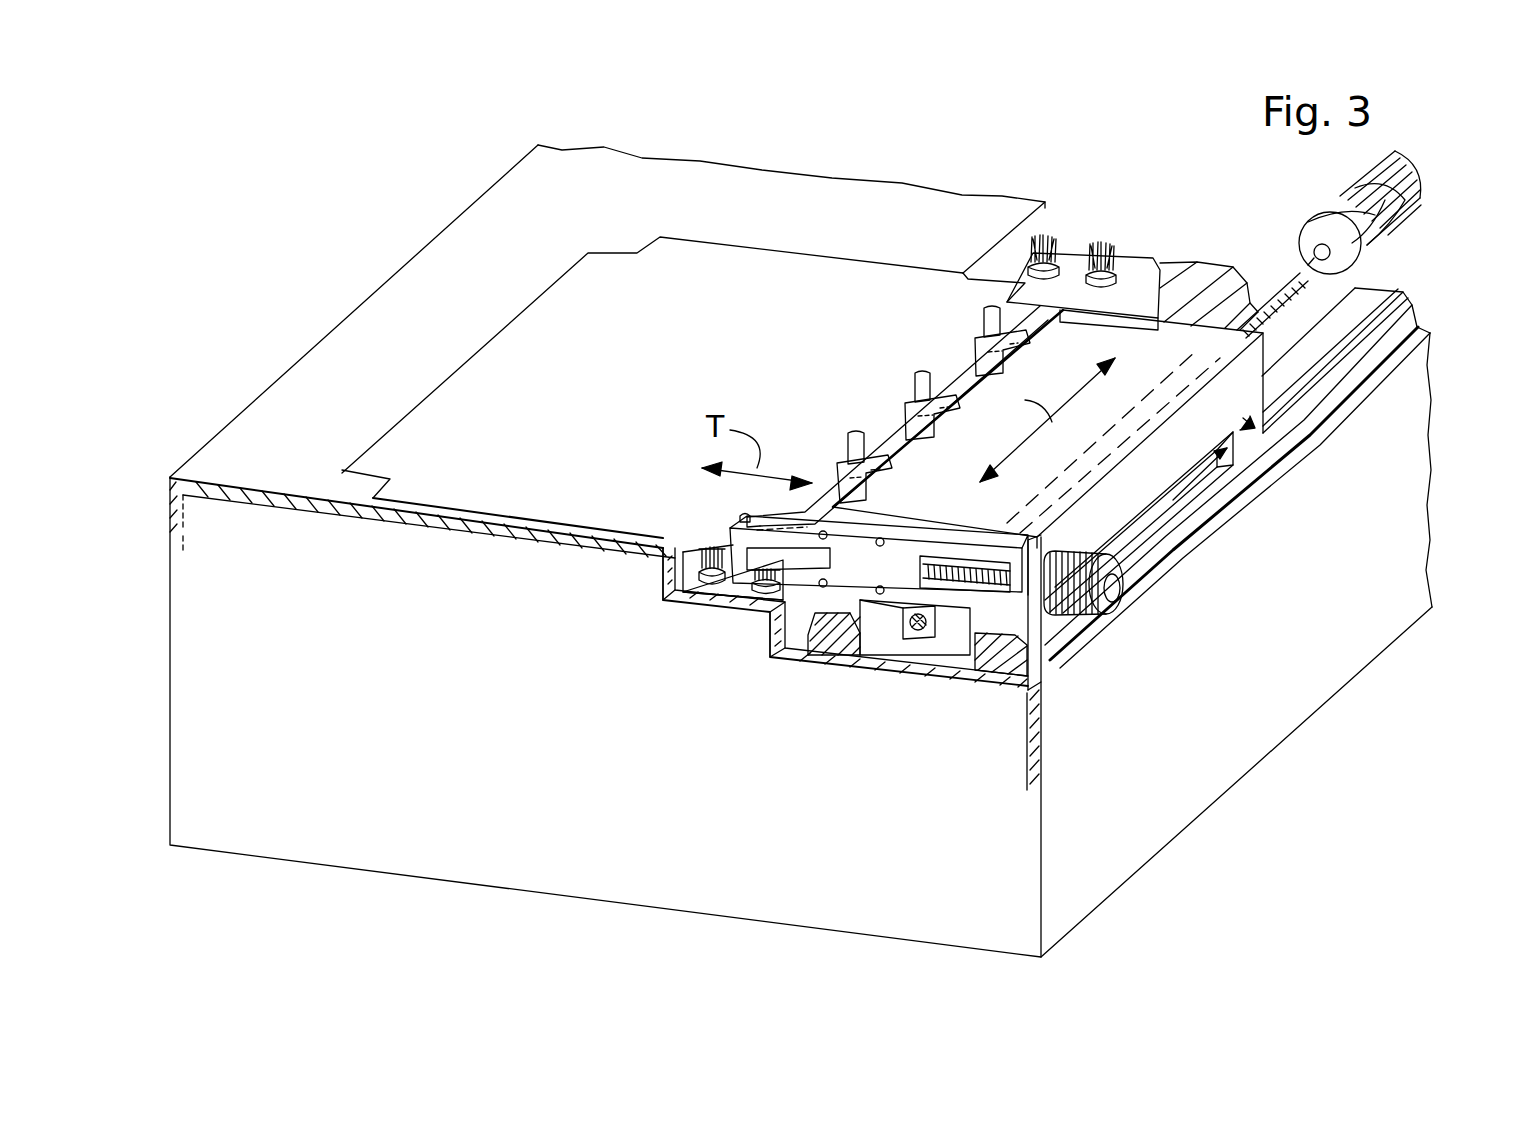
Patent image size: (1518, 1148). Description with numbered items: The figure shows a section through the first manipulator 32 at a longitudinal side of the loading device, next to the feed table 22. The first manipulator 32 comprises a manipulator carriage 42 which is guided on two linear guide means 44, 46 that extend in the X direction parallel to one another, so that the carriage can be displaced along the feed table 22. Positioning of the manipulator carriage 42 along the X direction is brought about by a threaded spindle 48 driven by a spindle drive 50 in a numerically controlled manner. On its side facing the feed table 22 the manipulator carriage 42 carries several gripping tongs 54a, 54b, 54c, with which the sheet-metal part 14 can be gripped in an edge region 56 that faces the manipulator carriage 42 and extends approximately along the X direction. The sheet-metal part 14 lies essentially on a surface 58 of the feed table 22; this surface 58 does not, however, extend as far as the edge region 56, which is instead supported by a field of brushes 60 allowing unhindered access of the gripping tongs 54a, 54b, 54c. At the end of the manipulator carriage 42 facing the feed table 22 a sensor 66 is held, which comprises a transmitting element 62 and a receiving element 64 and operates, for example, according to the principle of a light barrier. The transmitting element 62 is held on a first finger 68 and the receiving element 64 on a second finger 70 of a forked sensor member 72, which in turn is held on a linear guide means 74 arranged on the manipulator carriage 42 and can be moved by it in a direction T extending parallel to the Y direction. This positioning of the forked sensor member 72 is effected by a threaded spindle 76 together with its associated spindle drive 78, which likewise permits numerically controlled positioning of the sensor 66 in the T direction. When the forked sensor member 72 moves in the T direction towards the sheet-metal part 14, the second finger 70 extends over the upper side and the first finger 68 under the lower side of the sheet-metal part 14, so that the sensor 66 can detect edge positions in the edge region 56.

The sheet-metal part 14 is at (568, 300).
The feed table 22 is at (400, 298).
The first manipulator 32 is at (1248, 425).
The manipulator carriage 42 is at (1150, 485).
The linear guide means 44 is at (995, 672).
The linear guide means 46 is at (827, 652).
The threaded spindle 48 is at (1278, 283).
The spindle drive 50 is at (1395, 210).
The gripping tong 54a is at (867, 450).
The gripping tong 54b is at (938, 390).
The gripping tong 54c is at (973, 342).
The edge region 56 is at (1032, 299).
The surface 58 is at (300, 395).
The field of brushes 60 is at (1120, 247).
The transmitting element 62 is at (757, 556).
The receiving element 64 is at (742, 515).
The sensor 66 is at (705, 550).
The first finger 68 is at (780, 583).
The second finger 70 is at (790, 525).
The forked sensor member 72 is at (868, 600).
The linear guide means 74 is at (945, 538).
The threaded spindle 76 is at (925, 640).
The spindle drive 78 is at (1115, 594).